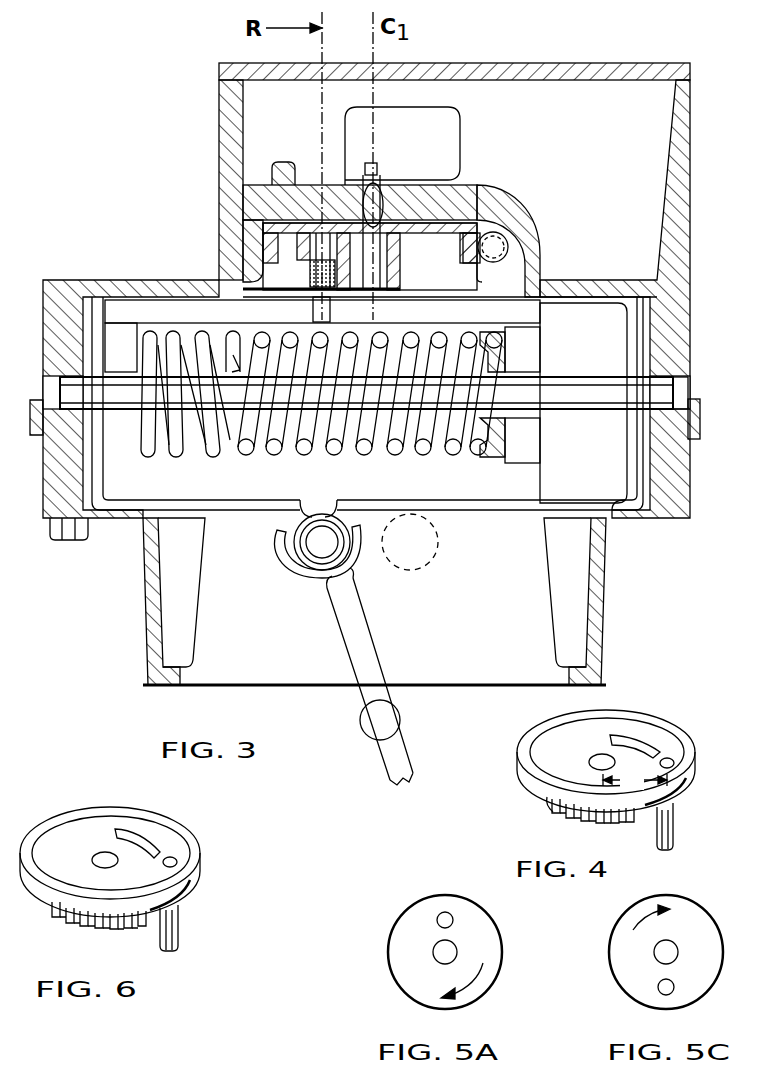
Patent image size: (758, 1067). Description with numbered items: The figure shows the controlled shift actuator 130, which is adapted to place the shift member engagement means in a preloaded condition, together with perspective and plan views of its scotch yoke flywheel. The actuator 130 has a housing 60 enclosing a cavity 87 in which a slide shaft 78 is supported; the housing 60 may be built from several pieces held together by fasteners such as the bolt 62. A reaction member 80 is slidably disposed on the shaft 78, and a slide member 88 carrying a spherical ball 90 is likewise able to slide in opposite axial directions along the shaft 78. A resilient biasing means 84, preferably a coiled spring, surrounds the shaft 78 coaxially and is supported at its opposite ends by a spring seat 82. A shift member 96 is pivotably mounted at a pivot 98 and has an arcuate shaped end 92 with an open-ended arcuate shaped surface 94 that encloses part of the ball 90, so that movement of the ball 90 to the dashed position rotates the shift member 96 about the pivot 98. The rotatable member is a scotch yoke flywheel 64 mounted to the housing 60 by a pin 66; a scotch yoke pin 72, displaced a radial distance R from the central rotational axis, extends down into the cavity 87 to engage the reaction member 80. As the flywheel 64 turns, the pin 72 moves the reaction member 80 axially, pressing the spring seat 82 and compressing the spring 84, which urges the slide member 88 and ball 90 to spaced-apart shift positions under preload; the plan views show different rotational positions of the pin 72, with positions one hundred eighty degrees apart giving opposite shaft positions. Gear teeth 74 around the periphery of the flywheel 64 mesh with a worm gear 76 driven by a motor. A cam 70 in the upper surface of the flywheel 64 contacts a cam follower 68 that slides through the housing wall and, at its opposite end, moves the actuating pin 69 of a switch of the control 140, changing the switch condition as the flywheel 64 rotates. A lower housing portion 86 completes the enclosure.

In FIG. 3, the actuator 130 is at (150, 212).
In FIG. 3, the housing 60 is at (680, 226).
In FIG. 3, the bolt 62 is at (64, 542).
In FIG. 3, the flywheel 64 is at (410, 236).
In FIG. 6, the flywheel 64 is at (198, 848).
In FIG. 4, the flywheel 64 is at (692, 748).
In FIG. 3, the pin 66 is at (395, 291).
In FIG. 3, the cam follower 68 is at (378, 204).
In FIG. 3, the actuating pin 69 is at (383, 176).
In FIG. 3, the cam 70 is at (387, 217).
In FIG. 6, the cam 70 is at (118, 834).
In FIG. 4, the cam 70 is at (615, 741).
In FIG. 3, the scotch yoke pin 72 is at (338, 305).
In FIG. 6, the scotch yoke pin 72 is at (180, 935).
In FIG. 4, the scotch yoke pin 72 is at (676, 838).
In FIG. 5A, the scotch yoke pin 72 is at (439, 912).
In FIG. 5C, the scotch yoke pin 72 is at (675, 992).
In FIG. 3, the gear teeth 74 is at (484, 278).
In FIG. 4, the gear teeth 74 is at (548, 815).
In FIG. 3, the worm gear 76 is at (503, 236).
In FIG. 3, the slide shaft 78 is at (660, 392).
In FIG. 3, the reaction member 80 is at (122, 300).
In FIG. 3, the spring seat 82 is at (142, 448).
In FIG. 3, the resilient biasing means 84 is at (208, 445).
In FIG. 3, the lower housing 86 is at (640, 458).
In FIG. 3, the cavity 87 is at (612, 520).
In FIG. 3, the slide member 88 is at (492, 492).
In FIG. 3, the spherical ball 90 is at (360, 565).
In FIG. 3, the arcuate shaped end 92 is at (283, 568).
In FIG. 3, the arcuate shaped surface 94 is at (312, 556).
In FIG. 3, the shift member 96 is at (380, 663).
In FIG. 3, the pivot 98 is at (365, 738).
In FIG. 3, the control 140 is at (466, 127).